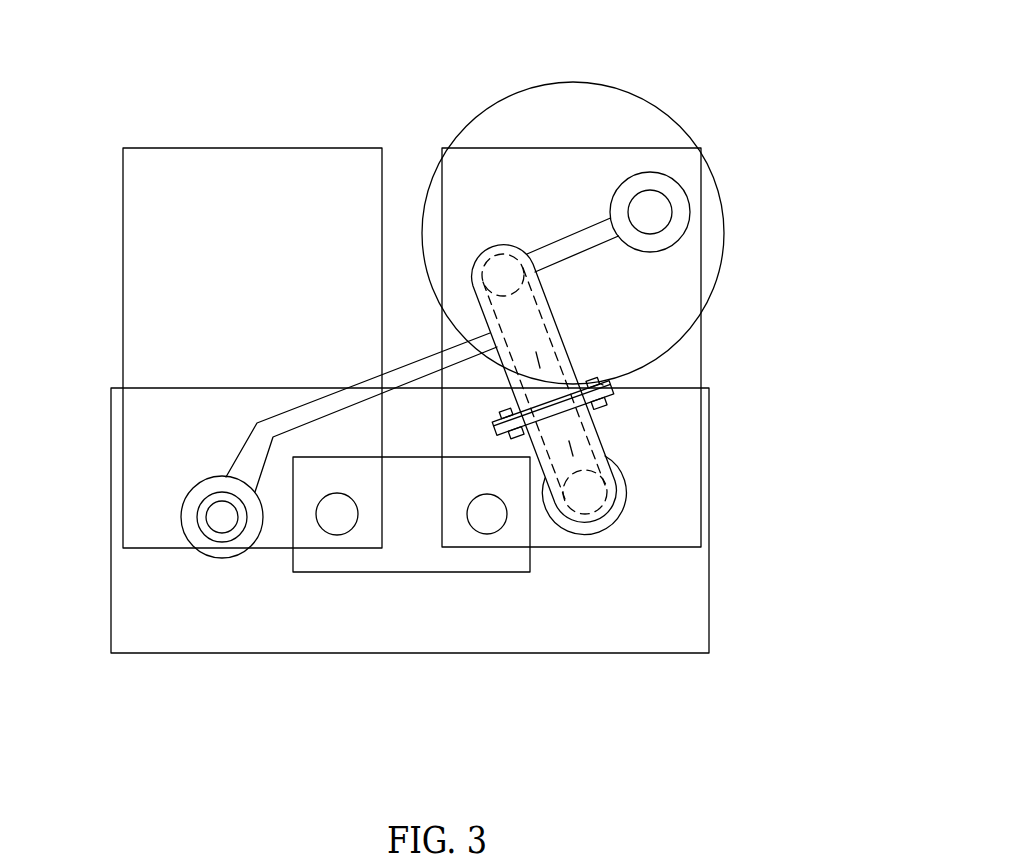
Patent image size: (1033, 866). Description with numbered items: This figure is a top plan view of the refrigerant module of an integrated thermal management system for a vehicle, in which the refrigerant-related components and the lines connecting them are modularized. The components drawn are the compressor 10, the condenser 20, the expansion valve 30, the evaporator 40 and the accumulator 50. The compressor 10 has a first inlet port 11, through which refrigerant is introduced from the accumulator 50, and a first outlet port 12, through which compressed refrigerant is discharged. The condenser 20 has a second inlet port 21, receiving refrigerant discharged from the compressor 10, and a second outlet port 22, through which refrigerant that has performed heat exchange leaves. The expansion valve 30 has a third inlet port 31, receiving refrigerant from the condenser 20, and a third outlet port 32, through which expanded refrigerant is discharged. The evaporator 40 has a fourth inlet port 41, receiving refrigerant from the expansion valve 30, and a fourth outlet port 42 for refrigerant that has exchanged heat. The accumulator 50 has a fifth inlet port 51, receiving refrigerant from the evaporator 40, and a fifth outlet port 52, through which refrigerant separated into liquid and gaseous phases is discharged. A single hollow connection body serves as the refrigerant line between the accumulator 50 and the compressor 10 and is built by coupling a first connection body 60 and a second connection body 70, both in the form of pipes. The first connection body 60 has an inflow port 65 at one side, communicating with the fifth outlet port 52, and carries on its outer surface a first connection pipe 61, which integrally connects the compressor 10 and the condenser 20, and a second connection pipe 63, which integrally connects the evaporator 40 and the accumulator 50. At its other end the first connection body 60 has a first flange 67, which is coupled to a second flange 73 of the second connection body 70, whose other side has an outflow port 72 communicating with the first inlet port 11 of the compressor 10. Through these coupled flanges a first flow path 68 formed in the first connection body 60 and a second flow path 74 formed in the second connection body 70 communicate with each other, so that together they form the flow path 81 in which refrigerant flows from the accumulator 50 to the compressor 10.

The compressor 10 is at (194, 654).
The first inlet port 11 is at (590, 514).
The first outlet port 12 is at (271, 533).
The condenser 20 is at (224, 161).
The second inlet port 21 is at (198, 532).
The second outlet port 22 is at (315, 609).
The expansion valve 30 is at (400, 573).
The third inlet port 31 is at (328, 535).
The third outlet port 32 is at (504, 612).
The evaporator 40 is at (558, 150).
The fourth inlet port 41 is at (480, 537).
The fourth outlet port 42 is at (673, 186).
The accumulator 50 is at (630, 90).
The fifth inlet port 51 is at (673, 192).
The fifth outlet port 52 is at (447, 179).
The first connection body 60 is at (548, 310).
The first connection pipe 61 is at (271, 533).
The second connection pipe 63 is at (673, 186).
The inflow port 65 is at (495, 247).
The first flange 67 is at (602, 387).
The first flow path 68 is at (540, 360).
The second connection body 70 is at (613, 469).
The outflow port 72 is at (603, 600).
The second flange 73 is at (613, 397).
The second flow path 74 is at (573, 447).
The flow path 81 is at (647, 492).